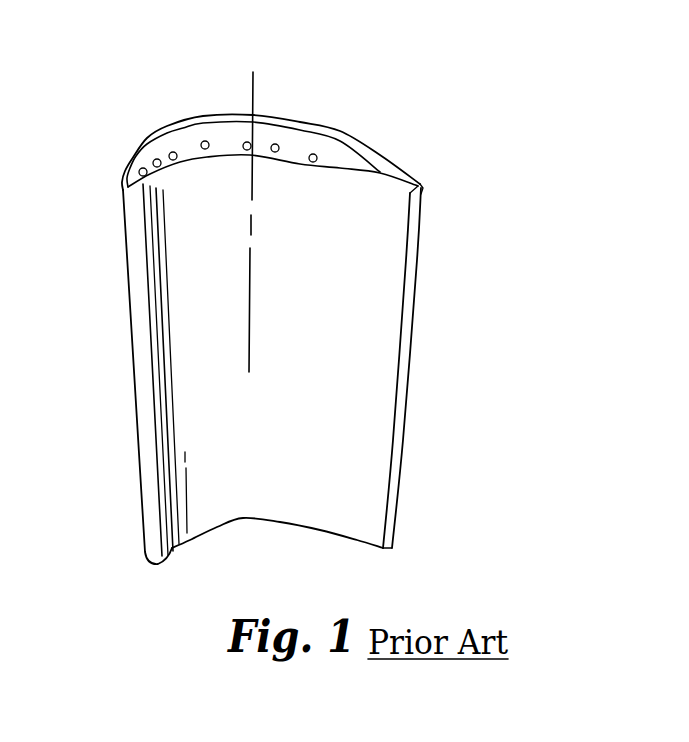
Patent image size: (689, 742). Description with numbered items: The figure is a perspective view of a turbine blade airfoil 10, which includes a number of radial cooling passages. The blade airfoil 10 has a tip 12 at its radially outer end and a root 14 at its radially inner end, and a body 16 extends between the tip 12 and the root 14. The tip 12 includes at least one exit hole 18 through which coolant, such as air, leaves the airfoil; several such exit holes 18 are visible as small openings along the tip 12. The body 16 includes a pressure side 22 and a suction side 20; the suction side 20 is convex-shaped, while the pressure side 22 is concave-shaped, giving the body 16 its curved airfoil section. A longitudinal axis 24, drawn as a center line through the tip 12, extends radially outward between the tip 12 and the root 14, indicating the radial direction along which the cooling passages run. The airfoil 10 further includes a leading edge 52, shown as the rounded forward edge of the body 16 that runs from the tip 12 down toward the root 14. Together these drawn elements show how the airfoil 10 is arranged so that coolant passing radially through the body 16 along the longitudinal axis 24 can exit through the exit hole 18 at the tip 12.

The blade airfoil 10 is at (559, 327).
The tip 12 is at (293, 152).
The root 14 is at (247, 521).
The body 16 is at (327, 303).
The exit hole 18 is at (175, 152).
The suction side 20 is at (282, 121).
The pressure side 22 is at (365, 370).
The longitudinal axis 24 is at (252, 91).
The leading edge 52 is at (132, 352).